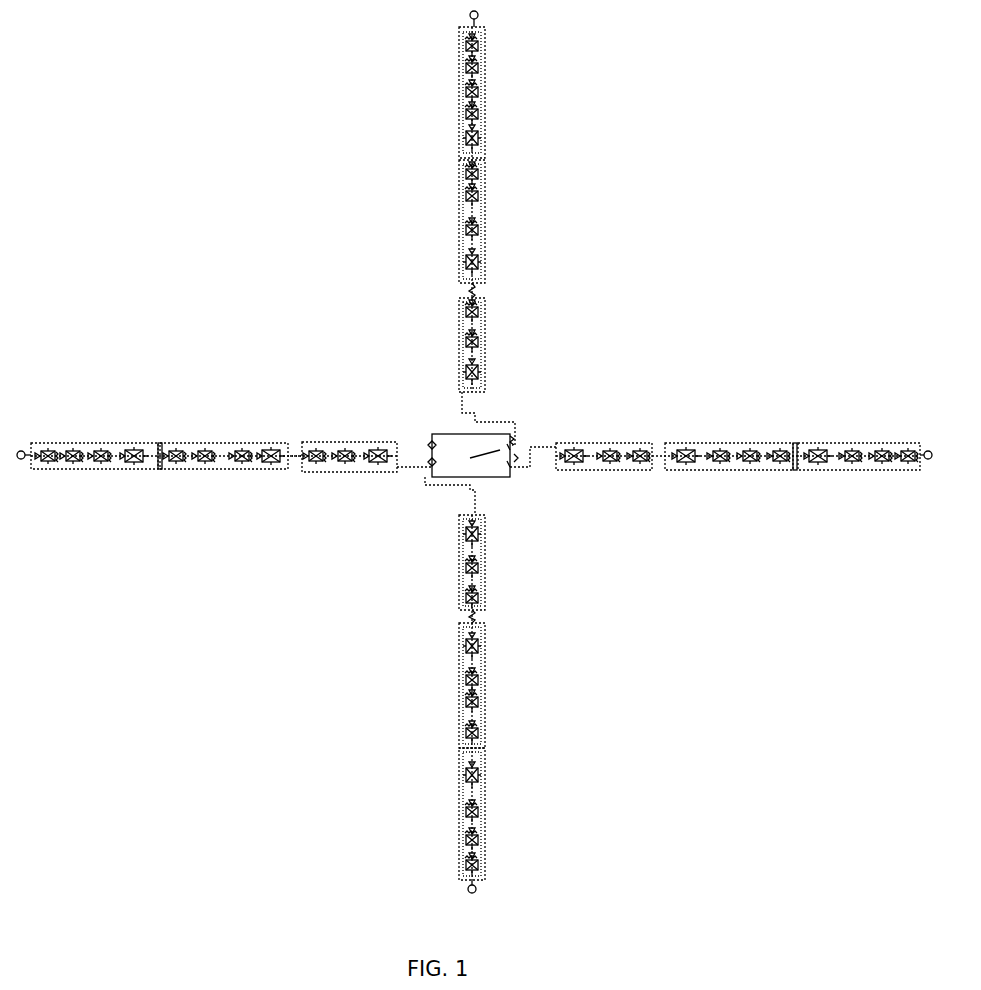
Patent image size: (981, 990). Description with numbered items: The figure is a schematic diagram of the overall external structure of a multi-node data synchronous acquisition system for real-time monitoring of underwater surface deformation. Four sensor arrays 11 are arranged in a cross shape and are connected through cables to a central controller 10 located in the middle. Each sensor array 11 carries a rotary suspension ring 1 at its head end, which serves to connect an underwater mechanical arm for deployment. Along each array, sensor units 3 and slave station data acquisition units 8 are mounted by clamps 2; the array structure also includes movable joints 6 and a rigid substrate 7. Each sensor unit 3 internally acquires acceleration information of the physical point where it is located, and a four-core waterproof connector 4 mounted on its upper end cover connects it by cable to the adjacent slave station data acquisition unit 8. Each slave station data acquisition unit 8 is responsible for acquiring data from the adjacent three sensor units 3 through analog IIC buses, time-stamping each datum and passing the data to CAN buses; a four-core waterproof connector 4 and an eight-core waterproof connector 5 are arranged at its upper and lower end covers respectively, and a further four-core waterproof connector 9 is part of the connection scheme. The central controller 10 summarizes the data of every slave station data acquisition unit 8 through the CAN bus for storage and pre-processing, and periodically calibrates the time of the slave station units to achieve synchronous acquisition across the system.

The rotary suspension ring 1 is at (478, 21).
The clamp 2 is at (480, 42).
The sensor unit 3 is at (480, 62).
The four-core waterproof connector 4 is at (480, 80).
The eight-core waterproof connector 5 is at (482, 115).
The movable joint 6 is at (484, 158).
The rigid substrate 7 is at (485, 278).
The slave station data acquisition unit 8 is at (486, 375).
The four-core waterproof connector 9 is at (430, 450).
The central controller 10 is at (470, 458).
The sensor array 11 is at (476, 663).